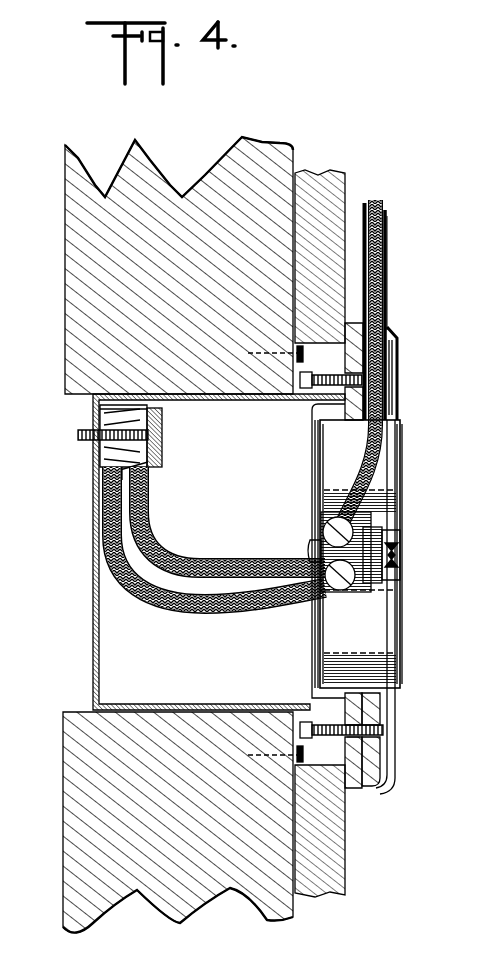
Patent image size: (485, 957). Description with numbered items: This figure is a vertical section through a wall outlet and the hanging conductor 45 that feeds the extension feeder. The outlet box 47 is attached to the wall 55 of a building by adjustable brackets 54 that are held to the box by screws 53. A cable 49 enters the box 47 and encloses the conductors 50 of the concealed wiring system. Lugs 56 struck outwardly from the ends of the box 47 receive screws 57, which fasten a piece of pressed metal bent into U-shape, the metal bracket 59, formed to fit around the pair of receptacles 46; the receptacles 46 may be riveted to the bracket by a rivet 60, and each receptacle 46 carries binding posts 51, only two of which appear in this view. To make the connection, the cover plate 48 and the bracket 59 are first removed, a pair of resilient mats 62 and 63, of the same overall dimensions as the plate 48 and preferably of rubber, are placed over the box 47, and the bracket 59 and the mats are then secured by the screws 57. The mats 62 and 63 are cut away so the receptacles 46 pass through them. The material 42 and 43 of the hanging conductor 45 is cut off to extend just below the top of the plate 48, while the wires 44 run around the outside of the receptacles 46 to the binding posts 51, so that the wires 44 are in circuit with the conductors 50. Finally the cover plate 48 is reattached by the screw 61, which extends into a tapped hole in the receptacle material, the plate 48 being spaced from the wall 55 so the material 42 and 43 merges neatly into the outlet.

The material of the hanging conductor 42 is at (387, 226).
The material of the hanging conductor 43 is at (364, 206).
The wires 44 is at (375, 203).
The hanging conductor 45 is at (387, 264).
The receptacle 46 is at (361, 554).
The box 47 is at (93, 628).
The cover plate 48 is at (396, 762).
The cable 49 is at (100, 416).
The conductors 50 is at (150, 520).
The binding posts 51 is at (324, 522).
The screws 53 is at (320, 403).
The adjustable brackets 54 is at (300, 397).
The wall 55 is at (258, 172).
The lugs 56 is at (340, 374).
The screws 57 is at (326, 420).
The metal bracket 59 is at (312, 482).
The rivet 60 is at (310, 550).
The screw 61 is at (398, 545).
The mat 62 is at (355, 790).
The mat 63 is at (374, 790).